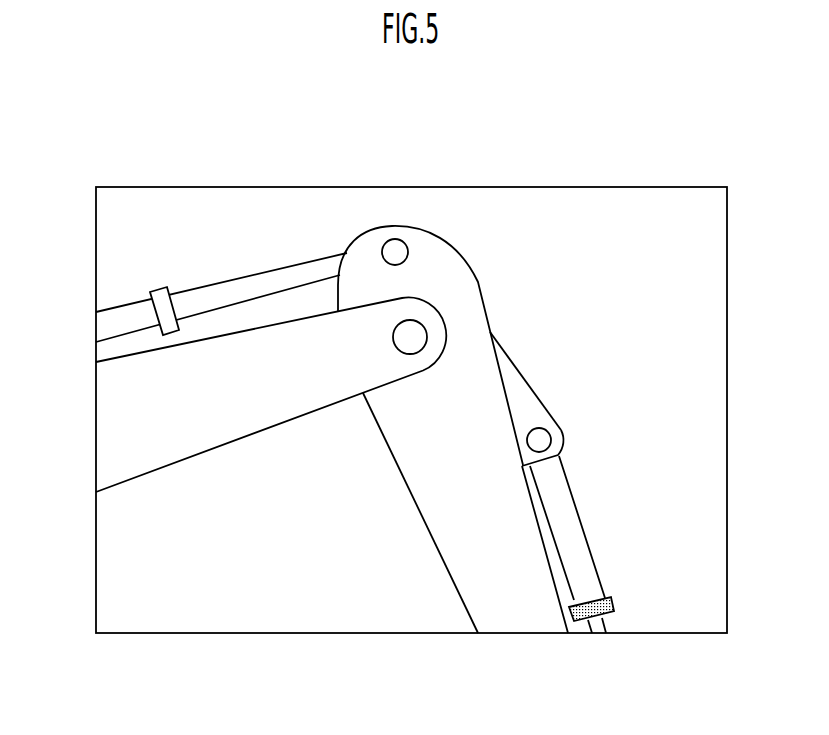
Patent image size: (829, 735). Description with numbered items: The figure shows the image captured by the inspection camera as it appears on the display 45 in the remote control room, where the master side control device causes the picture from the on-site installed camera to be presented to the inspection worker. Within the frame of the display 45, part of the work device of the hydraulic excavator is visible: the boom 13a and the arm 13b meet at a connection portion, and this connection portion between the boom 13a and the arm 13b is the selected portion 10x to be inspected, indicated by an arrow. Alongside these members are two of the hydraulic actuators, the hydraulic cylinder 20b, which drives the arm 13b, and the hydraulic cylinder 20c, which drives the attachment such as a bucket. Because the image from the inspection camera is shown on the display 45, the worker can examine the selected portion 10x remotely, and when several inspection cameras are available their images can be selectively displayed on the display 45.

The display 45 is at (340, 187).
The hydraulic cylinder 20b is at (130, 302).
The selected portion 10x is at (486, 270).
The boom 13a is at (162, 470).
The arm 13b is at (447, 570).
The hydraulic cylinder 20c is at (583, 528).